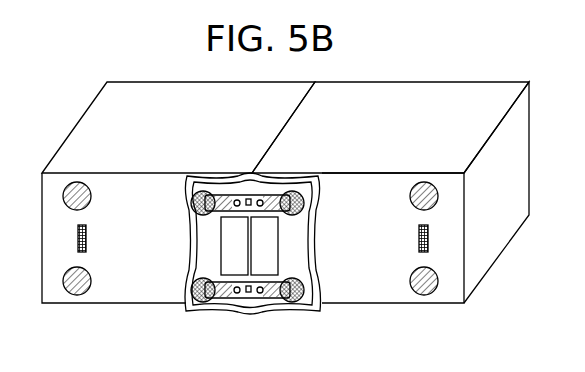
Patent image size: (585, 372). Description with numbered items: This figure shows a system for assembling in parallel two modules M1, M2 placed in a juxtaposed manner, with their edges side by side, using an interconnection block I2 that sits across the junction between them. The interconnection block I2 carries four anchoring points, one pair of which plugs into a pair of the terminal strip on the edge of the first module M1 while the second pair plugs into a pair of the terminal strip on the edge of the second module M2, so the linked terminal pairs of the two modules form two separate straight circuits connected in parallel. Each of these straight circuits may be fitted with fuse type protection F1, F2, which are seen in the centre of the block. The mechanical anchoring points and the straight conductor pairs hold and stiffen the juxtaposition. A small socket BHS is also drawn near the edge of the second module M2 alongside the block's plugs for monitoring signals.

The first module M1 is at (77, 150).
The second module M2 is at (478, 271).
The interconnection block I2 is at (234, 243).
The fuse type protection F1 is at (254, 204).
The fuse type protection F2 is at (251, 287).
The bolt hole slot BHS is at (419, 240).